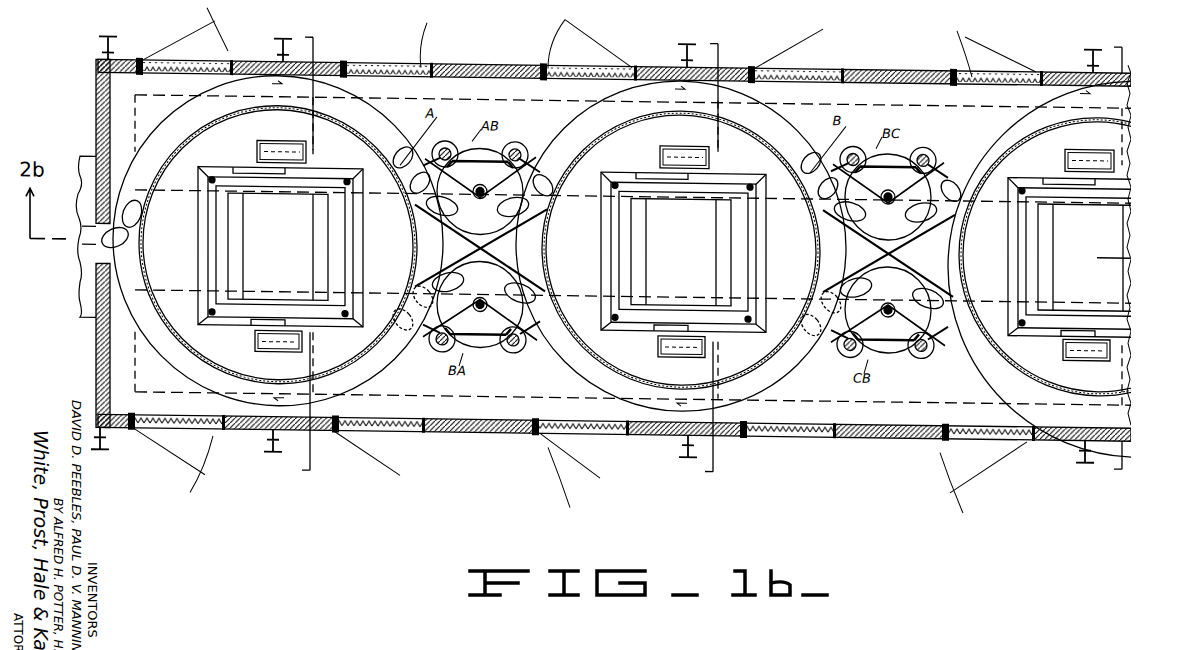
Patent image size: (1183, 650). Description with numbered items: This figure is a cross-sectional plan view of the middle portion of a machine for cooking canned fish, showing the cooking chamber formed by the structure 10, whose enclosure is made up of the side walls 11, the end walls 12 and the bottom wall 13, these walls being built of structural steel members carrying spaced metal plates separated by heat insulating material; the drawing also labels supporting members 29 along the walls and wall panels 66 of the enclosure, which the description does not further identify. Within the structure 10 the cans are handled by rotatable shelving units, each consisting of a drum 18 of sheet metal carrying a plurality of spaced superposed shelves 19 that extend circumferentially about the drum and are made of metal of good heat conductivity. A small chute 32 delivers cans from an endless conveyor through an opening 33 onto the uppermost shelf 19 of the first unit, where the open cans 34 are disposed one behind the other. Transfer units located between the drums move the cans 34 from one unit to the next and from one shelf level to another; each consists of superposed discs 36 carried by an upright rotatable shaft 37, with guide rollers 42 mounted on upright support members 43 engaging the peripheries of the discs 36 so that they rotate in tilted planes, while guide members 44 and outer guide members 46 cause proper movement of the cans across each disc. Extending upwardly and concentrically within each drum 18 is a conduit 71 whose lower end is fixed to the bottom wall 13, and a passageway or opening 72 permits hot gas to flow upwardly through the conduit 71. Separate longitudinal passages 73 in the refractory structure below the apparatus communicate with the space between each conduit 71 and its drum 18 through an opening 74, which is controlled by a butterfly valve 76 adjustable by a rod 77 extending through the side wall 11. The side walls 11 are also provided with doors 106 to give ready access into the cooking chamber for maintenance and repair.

The structure 10 is at (484, 49).
The side walls 11 is at (640, 59).
The end walls 12 is at (97, 78).
The bottom wall 13 is at (123, 103).
The drum 18 is at (411, 209).
The shelves 19 is at (428, 226).
The support beam 29 is at (285, 33).
The chute 32 is at (86, 255).
The opening 33 is at (101, 230).
The cans 34 is at (119, 242).
The discs 36 is at (506, 142).
The shaft 37 is at (485, 186).
The guide rollers 42 is at (683, 251).
The upright support members 43 is at (446, 135).
The guide members 44 is at (479, 231).
The outer guide members 46 is at (684, 251).
The insulated wall panel 66 is at (470, 62).
The conduit 71 is at (205, 226).
The passageway or opening 72 is at (270, 241).
The longitudinal passages 73 is at (491, 100).
The opening 74 is at (257, 138).
The butterfly valves 76 is at (278, 146).
The rods 77 is at (316, 38).
The doors 106 is at (180, 57).